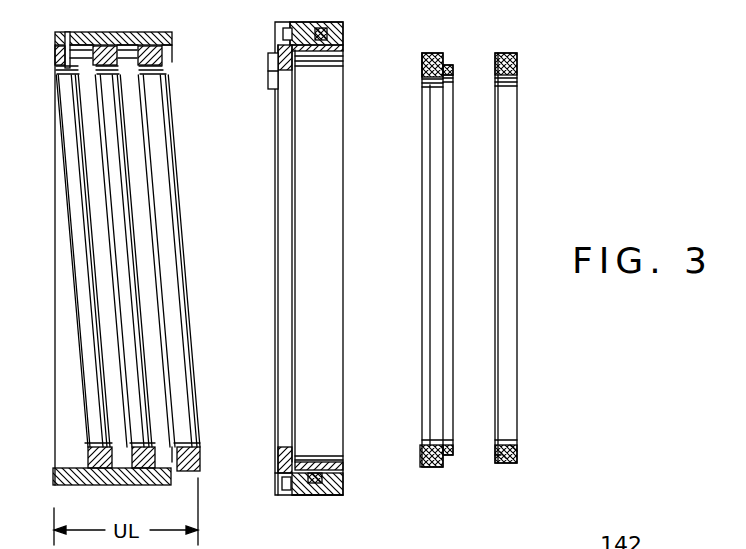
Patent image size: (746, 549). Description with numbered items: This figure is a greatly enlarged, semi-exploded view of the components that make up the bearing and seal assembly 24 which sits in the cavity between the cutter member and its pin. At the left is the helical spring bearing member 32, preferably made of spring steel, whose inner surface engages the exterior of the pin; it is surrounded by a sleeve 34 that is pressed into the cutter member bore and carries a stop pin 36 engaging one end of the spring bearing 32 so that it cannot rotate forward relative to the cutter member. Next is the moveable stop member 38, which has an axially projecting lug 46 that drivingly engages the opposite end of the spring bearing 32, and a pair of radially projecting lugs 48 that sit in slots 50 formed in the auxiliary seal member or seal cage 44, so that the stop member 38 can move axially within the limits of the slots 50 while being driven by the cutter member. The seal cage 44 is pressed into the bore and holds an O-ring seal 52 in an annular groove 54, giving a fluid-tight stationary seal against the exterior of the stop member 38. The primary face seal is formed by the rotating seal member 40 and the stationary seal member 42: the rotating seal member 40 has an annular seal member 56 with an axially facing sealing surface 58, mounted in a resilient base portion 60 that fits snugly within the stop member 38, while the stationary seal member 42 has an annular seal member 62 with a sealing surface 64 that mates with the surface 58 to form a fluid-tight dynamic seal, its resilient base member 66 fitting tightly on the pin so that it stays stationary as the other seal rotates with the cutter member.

The bearing and seal assembly 24 is at (528, 92).
The helical spring bearing member 32 is at (168, 203).
The sleeve 34 is at (165, 32).
The stop pin 36 is at (68, 34).
The moveable stop member 38 is at (285, 452).
The rotating seal member 40 is at (432, 58).
The stationary seal member 42 is at (507, 450).
The auxiliary seal member or seal cage 44 is at (330, 490).
The lug 46 is at (268, 77).
The radially projecting lugs 48 is at (283, 33).
The slots 50 is at (290, 480).
The O-ring seal 52 is at (315, 478).
The annular groove 54 is at (317, 44).
The annular seal member 56 is at (443, 62).
The sealing surface 58 is at (450, 66).
The resilient base portion 60 is at (422, 70).
The annular seal member 62 is at (500, 460).
The sealing surface 64 is at (495, 457).
The resilient base member 66 is at (517, 452).